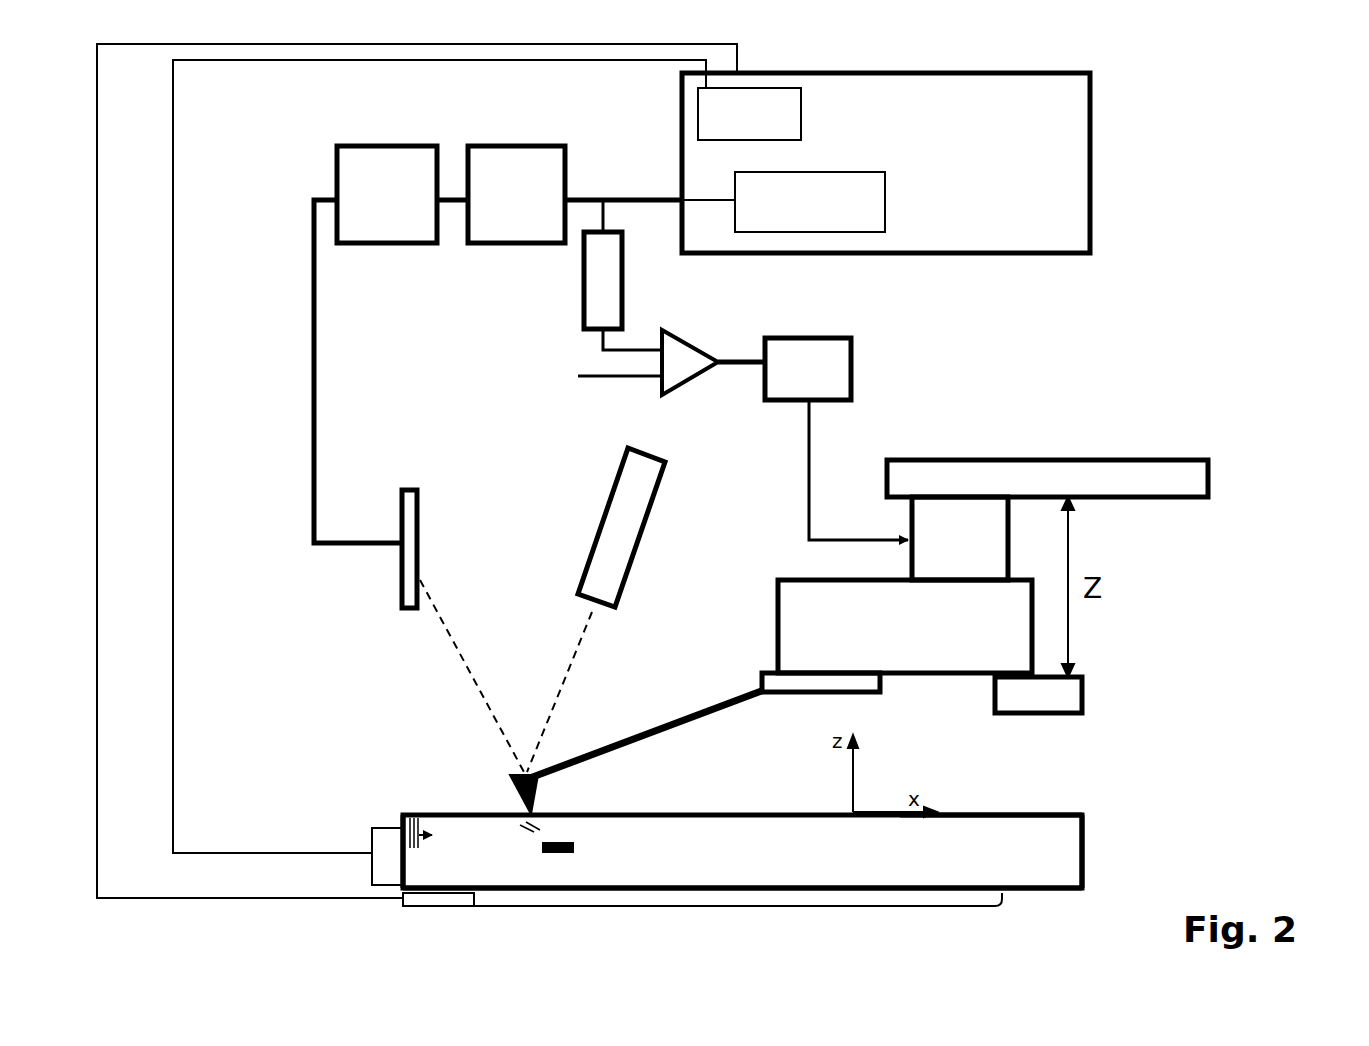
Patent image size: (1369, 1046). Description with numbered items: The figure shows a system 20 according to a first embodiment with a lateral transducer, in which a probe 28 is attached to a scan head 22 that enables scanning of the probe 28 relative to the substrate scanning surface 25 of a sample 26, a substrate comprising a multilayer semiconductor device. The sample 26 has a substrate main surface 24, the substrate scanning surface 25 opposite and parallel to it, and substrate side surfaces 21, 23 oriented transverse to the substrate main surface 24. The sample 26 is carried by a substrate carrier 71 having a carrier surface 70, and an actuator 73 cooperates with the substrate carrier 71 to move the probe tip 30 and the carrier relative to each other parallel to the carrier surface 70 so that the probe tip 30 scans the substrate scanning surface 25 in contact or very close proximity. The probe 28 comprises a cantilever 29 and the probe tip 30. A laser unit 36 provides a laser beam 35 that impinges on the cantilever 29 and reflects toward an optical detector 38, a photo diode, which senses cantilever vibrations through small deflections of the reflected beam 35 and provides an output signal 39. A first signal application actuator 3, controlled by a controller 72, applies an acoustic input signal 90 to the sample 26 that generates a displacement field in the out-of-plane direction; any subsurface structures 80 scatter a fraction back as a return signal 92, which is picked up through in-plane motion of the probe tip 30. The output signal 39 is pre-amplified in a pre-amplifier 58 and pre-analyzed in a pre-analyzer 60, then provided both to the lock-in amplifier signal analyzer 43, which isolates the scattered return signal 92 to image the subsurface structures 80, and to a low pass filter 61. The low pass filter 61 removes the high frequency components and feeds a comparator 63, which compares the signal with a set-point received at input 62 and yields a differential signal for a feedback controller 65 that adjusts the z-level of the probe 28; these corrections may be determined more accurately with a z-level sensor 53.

The first signal application actuator 3 is at (382, 835).
The system 20 is at (1204, 726).
The substrate side surface 21 is at (399, 817).
The scan head 22 is at (932, 677).
The substrate side surface 23 is at (1084, 824).
The substrate main surface 24 is at (1040, 890).
The substrate scanning surface 25 is at (988, 812).
The sample 26 is at (1084, 860).
The probe 28 is at (740, 708).
The cantilever 29 is at (674, 722).
The probe tip 30 is at (540, 794).
The laser beam 35 is at (560, 688).
The laser unit 36 is at (648, 515).
The optical detector 38 is at (418, 497).
The output signal 39 is at (355, 540).
The signal analyzer 43 is at (885, 200).
The z-level sensor 53 is at (1085, 692).
The pre-amplifier 58 is at (362, 145).
The pre-analyzer 60 is at (488, 145).
The low pass filter 61 is at (584, 300).
The input 62 is at (590, 385).
The comparator 63 is at (692, 342).
The feedback controller 65 is at (851, 370).
The carrier surface 70 is at (810, 893).
The substrate carrier 71 is at (880, 900).
The controller 72 is at (801, 118).
The actuator 73 is at (427, 900).
The subsurface structures 80 is at (573, 848).
The acoustic input signal 90 is at (422, 813).
The return signal 92 is at (535, 832).